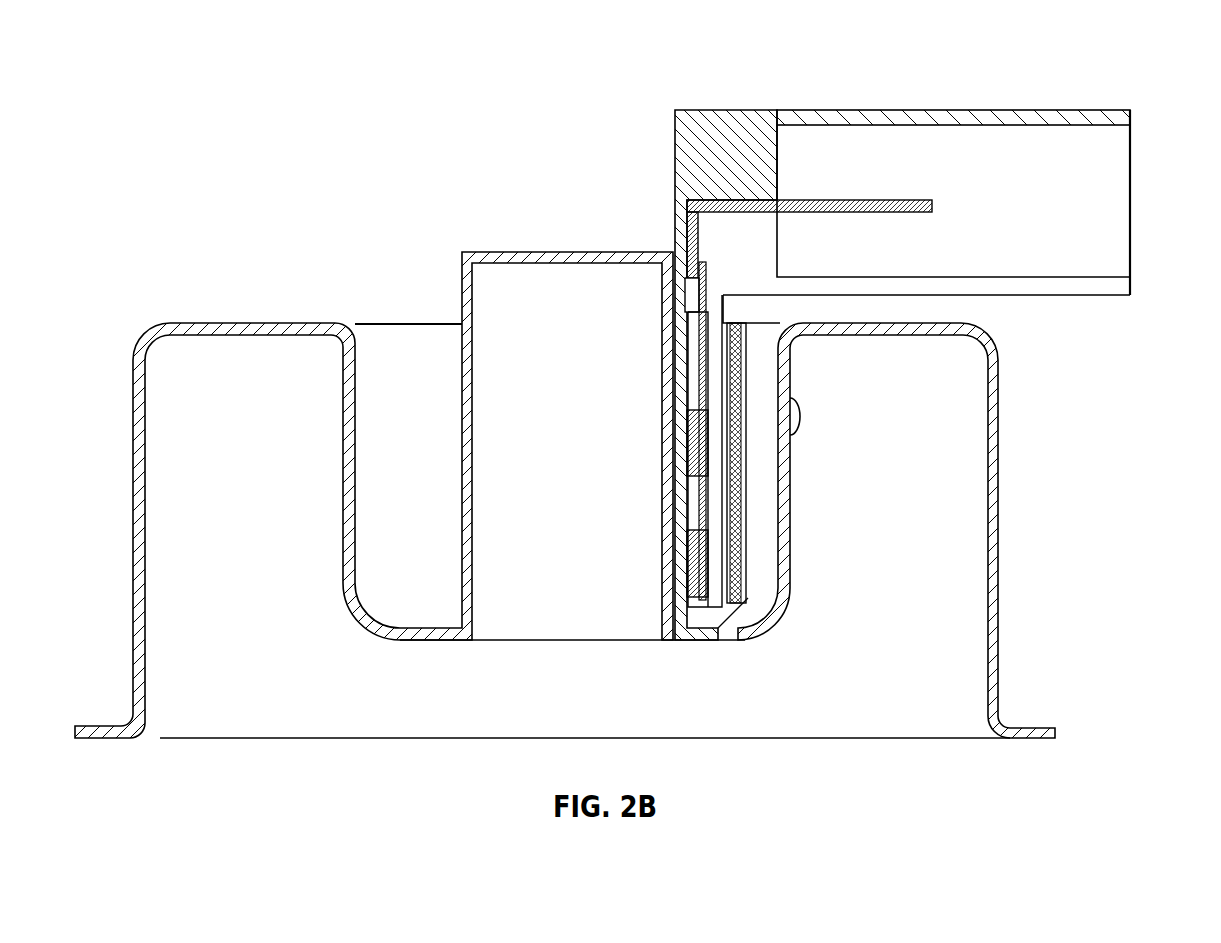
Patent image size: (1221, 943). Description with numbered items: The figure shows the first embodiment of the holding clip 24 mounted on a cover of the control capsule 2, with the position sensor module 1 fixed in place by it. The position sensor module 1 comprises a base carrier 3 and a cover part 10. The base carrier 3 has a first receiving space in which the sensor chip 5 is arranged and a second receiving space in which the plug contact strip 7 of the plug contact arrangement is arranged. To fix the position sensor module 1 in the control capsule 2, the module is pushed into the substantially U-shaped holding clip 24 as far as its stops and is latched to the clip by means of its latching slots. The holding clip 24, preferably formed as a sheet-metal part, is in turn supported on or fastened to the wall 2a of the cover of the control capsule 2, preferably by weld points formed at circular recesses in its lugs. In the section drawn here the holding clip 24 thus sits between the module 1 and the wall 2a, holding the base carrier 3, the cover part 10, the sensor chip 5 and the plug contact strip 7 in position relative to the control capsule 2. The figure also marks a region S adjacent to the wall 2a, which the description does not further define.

The position sensor module 1 is at (631, 94).
The control capsule 2 is at (222, 308).
The wall 2a is at (1003, 383).
The base carrier 3 is at (881, 110).
The sensor chip 5 is at (682, 465).
The plug contact strip 7 is at (932, 195).
The cover part 10 is at (670, 152).
The holding clip 24 is at (748, 526).
The space S is at (801, 414).